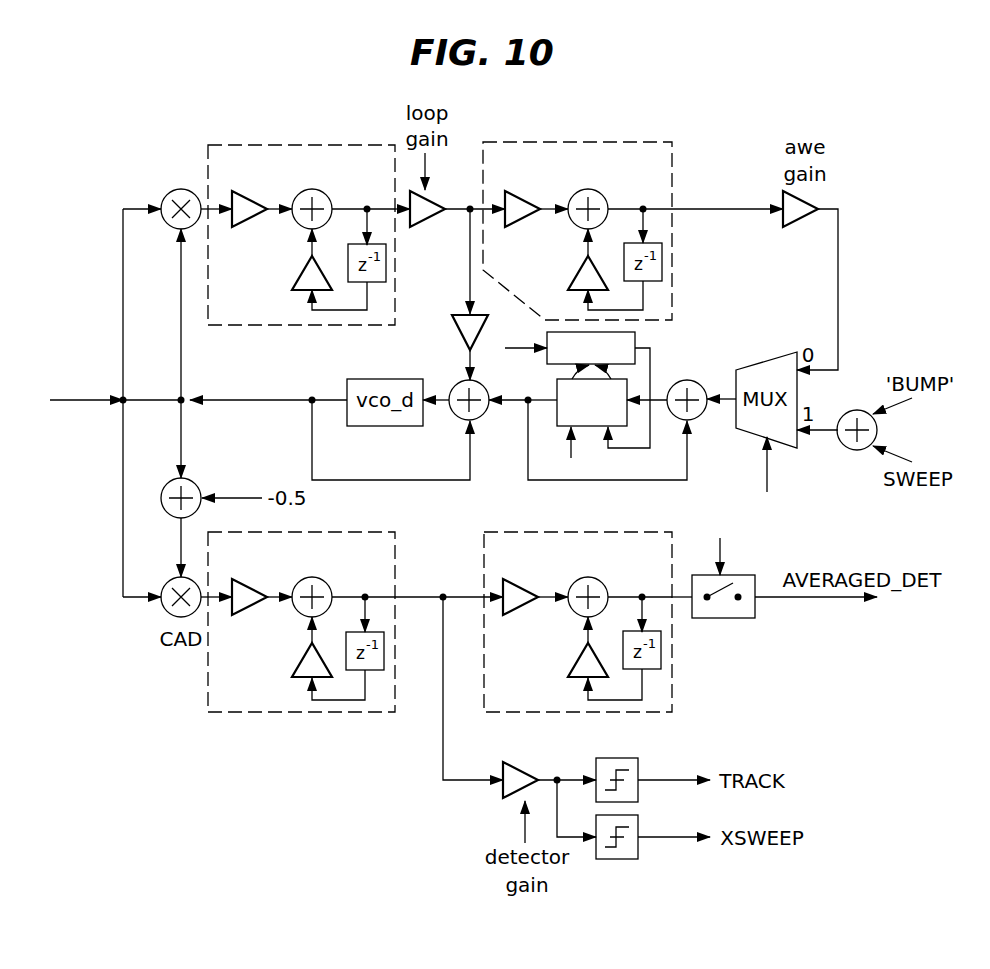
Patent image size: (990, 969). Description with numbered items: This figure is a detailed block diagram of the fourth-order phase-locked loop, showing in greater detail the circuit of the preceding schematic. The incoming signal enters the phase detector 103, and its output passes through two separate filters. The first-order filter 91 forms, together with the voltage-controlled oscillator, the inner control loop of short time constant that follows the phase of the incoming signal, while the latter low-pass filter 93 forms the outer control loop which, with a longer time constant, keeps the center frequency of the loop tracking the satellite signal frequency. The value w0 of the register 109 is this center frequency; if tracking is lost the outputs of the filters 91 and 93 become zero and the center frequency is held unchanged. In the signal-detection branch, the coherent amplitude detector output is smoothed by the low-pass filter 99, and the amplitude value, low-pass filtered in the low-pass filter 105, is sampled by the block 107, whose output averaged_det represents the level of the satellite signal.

The first-order filter 91 is at (257, 150).
The low-pass filter 93 is at (522, 150).
The low-pass filter 99 is at (222, 680).
The phase detector 103 is at (166, 196).
The low-pass filter 105 is at (662, 690).
The block 107 is at (733, 572).
The register 109 is at (597, 428).